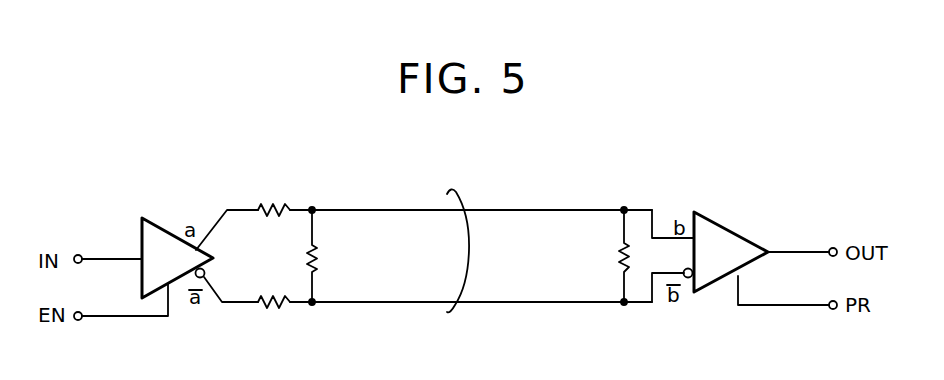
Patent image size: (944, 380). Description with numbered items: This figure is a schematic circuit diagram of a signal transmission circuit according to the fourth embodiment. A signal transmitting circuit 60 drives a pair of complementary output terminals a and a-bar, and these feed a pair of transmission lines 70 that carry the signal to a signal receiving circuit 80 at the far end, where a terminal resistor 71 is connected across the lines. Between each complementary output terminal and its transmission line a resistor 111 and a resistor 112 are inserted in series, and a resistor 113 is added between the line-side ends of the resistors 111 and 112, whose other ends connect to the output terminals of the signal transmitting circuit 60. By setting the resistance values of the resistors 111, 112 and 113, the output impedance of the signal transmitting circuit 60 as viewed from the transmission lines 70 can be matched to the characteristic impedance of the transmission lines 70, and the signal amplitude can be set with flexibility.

The signal transmitting circuit 60 is at (163, 225).
The resistor 111 is at (273, 207).
The resistor 112 is at (282, 308).
The resistor 113 is at (320, 260).
The transmission lines 70 is at (467, 203).
The terminal resistor 71 is at (617, 262).
The signal receiving circuit 80 is at (727, 228).